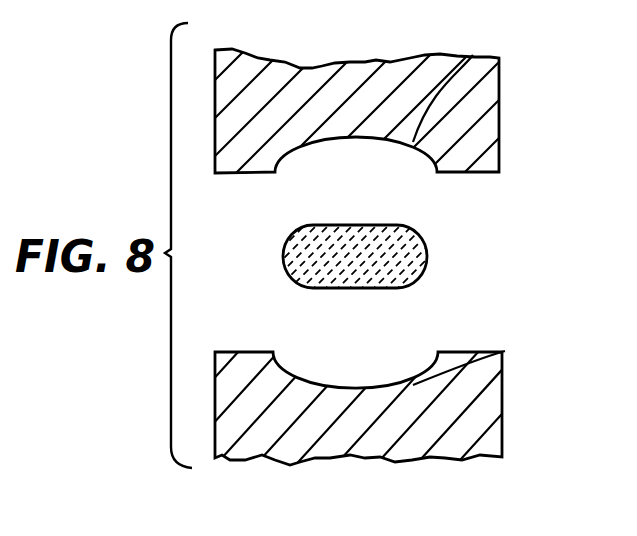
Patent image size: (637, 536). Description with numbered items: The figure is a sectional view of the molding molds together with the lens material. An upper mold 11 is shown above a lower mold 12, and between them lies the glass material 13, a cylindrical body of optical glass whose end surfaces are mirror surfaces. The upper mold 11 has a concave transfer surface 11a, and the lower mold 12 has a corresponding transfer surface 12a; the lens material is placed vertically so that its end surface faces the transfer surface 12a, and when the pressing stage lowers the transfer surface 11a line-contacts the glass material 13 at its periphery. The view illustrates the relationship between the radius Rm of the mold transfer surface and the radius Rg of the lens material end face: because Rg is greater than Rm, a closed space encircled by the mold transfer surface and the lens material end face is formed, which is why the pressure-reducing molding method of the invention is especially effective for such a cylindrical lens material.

The upper mold 11 is at (497, 108).
The transfer surface of the upper mold 11a is at (473, 55).
The lower mold 12 is at (483, 423).
The transfer surface of the lower mold 12a is at (505, 351).
The glass material 13 is at (424, 258).
The radius of the mold transfer surface Rm is at (377, 140).
The radius of the lens material end face Rg is at (392, 231).